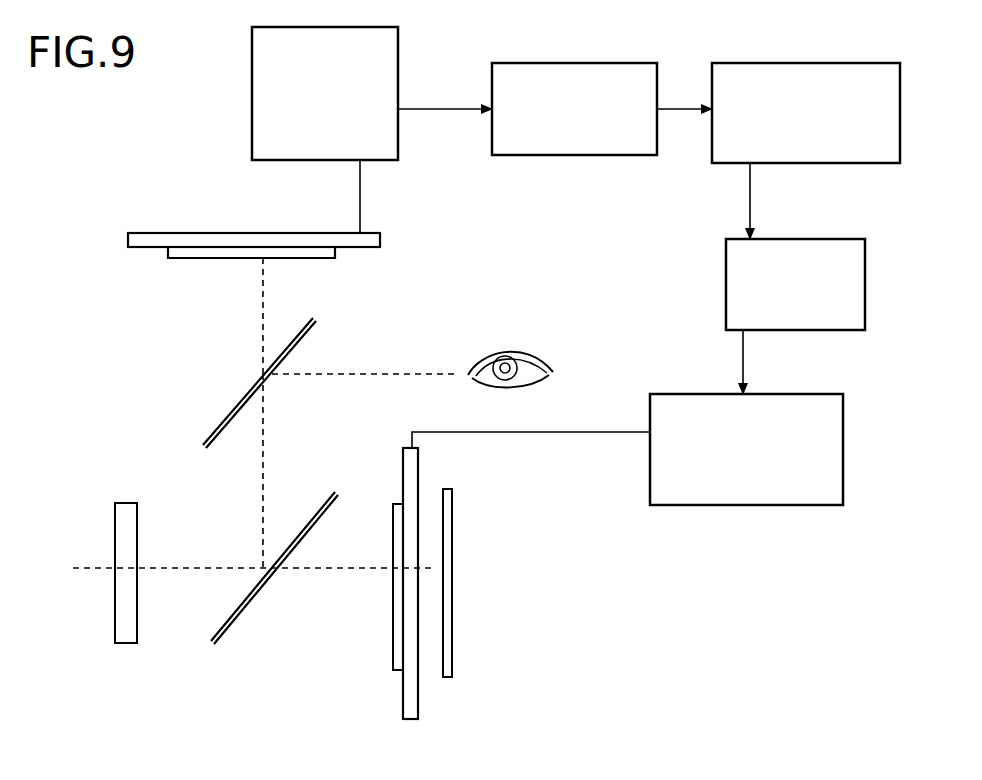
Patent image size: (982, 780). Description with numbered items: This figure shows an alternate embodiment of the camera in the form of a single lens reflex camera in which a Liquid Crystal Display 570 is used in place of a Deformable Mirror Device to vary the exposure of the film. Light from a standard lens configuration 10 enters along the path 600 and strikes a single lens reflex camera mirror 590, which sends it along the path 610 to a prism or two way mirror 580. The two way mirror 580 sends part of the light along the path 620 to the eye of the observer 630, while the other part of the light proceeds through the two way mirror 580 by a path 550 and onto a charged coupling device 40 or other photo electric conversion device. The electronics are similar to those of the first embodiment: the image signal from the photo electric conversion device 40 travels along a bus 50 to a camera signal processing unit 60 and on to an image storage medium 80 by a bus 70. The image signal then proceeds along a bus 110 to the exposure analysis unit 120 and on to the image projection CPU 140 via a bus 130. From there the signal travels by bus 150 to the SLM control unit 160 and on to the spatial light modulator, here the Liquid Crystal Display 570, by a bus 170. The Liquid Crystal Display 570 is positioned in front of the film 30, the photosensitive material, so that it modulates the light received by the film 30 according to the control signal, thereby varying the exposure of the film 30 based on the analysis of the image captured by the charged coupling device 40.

The lens 10 is at (115, 628).
The photosensitive material 30 is at (452, 590).
The photo electric conversion device 40 is at (175, 233).
The bus 50 is at (360, 205).
The camera signal processing unit 60 is at (252, 62).
The bus 70 is at (447, 109).
The image storage medium 80 is at (540, 63).
The bus 110 is at (690, 109).
The exposure analysis unit 120 is at (800, 63).
The bus 130 is at (750, 192).
The image projection CPU 140 is at (726, 265).
The bus 150 is at (743, 345).
The SLM control unit 160 is at (745, 505).
The bus 170 is at (555, 432).
The path 550 is at (258, 312).
The Liquid Crystal Display 570 is at (418, 700).
The two way mirror 580 is at (232, 410).
The single lens reflex camera mirror 590 is at (258, 598).
The path 600 is at (195, 568).
The path 610 is at (268, 443).
The path 620 is at (340, 374).
The eye of the observer 630 is at (518, 343).